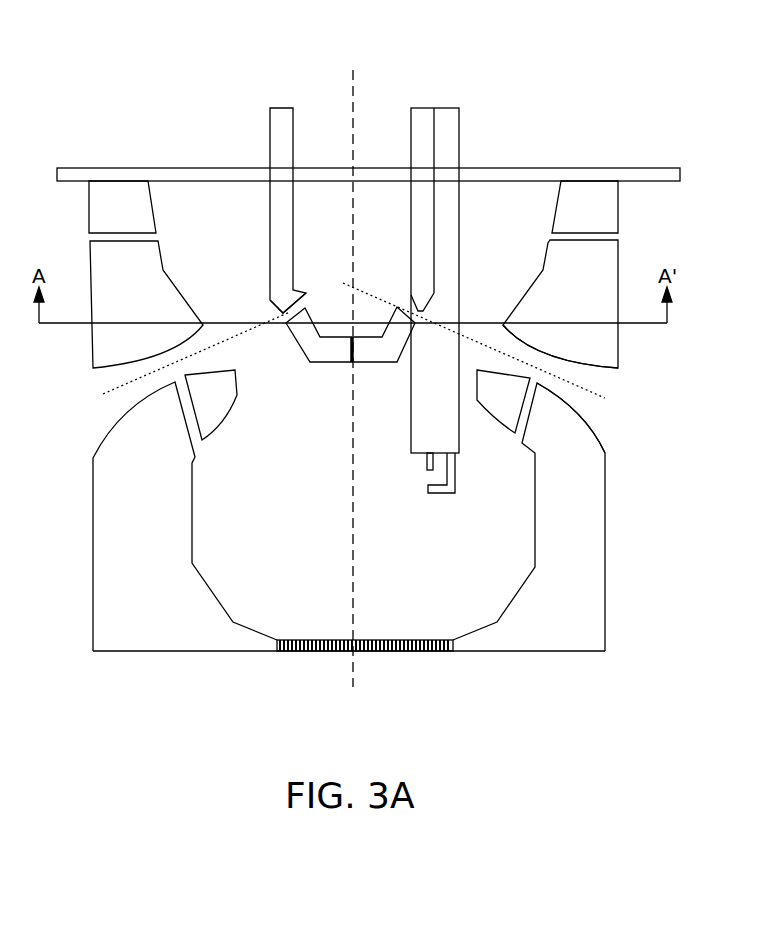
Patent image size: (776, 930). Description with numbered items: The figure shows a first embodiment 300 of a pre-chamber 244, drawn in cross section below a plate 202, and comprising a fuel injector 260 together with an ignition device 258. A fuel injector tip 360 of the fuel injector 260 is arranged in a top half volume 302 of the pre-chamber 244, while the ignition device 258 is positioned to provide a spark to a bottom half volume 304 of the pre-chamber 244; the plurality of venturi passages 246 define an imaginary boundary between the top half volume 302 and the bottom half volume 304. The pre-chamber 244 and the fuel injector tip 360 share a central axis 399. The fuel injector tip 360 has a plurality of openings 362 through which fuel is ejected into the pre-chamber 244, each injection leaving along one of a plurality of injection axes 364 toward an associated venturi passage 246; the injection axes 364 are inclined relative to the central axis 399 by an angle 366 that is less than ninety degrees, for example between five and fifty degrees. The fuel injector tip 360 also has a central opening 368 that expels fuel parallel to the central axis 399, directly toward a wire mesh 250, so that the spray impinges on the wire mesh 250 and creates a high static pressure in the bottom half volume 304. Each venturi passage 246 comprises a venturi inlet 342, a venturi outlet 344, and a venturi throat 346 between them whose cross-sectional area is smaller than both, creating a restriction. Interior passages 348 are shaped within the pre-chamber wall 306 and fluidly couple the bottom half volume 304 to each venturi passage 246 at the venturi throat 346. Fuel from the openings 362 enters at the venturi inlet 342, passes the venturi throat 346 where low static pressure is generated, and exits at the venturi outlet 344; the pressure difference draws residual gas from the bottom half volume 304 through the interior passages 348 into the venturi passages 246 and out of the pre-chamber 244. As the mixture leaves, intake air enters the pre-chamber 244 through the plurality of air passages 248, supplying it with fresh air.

The first embodiment 300 is at (682, 75).
The plate 202 is at (112, 167).
The top half volume 302 is at (166, 274).
The bottom half volume 304 is at (357, 465).
The air passages 248 is at (618, 240).
The venturi inlet 342 is at (497, 342).
The venturi throat 346 is at (542, 357).
The venturi outlet 344 is at (610, 383).
The injection axes 364 is at (103, 393).
The fuel injector 260 is at (268, 108).
The openings 362 is at (300, 300).
The ignition device 258 is at (455, 108).
The interior passages 348 is at (527, 444).
The fuel injector tip 360 is at (310, 362).
The central opening 368 is at (354, 362).
The angle 366 is at (390, 290).
The central axis 399 is at (353, 675).
The pre-chamber wall 306 is at (605, 490).
The venturi passages 246 is at (605, 453).
The pre-chamber 244 is at (605, 651).
The wire mesh 250 is at (327, 652).